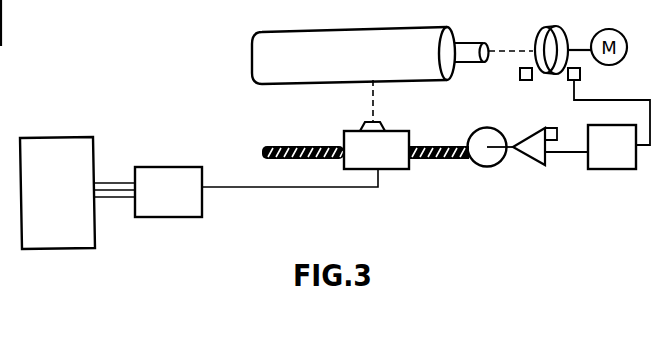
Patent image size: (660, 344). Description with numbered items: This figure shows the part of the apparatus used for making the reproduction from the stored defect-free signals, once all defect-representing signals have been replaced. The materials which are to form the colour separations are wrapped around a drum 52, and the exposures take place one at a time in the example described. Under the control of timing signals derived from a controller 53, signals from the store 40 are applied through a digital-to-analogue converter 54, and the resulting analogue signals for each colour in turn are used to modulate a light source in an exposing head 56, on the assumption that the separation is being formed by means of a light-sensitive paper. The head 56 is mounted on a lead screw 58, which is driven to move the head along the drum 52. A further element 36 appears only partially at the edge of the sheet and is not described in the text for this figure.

The line component (partial) 36 is at (1, 18).
The store 40 is at (57, 145).
The drum 52 is at (313, 37).
The controller 53 is at (612, 170).
The digital-to-analogue converter 54 is at (174, 165).
The exposing head 56 is at (390, 170).
The lead screw 58 is at (431, 144).